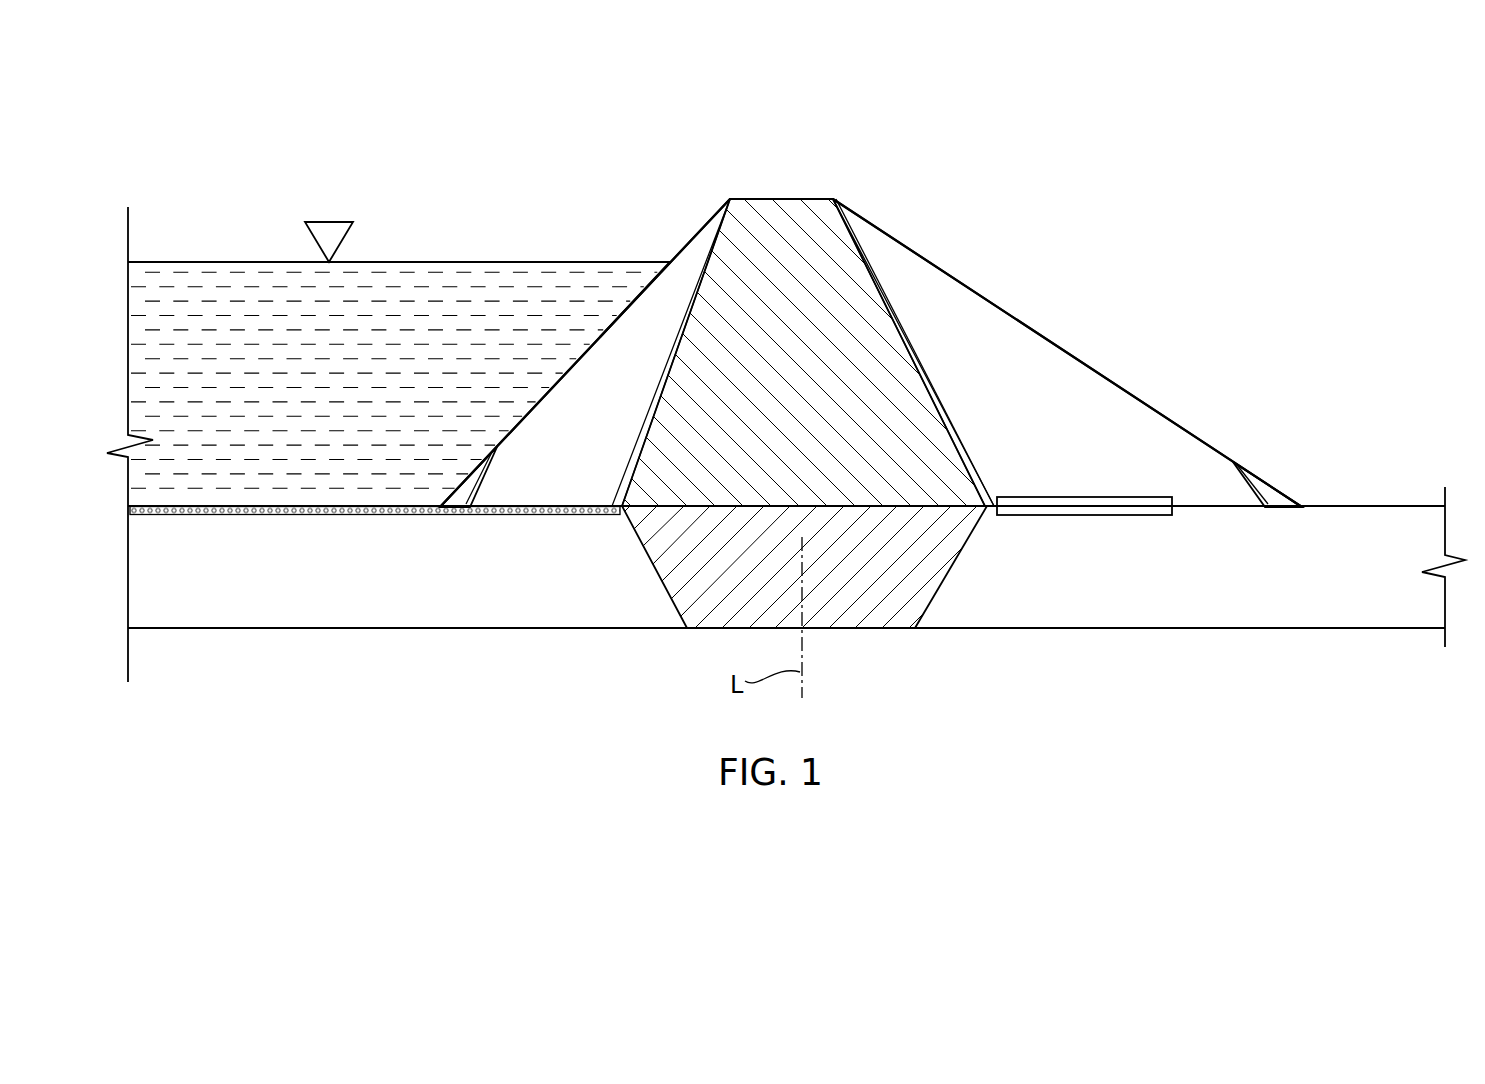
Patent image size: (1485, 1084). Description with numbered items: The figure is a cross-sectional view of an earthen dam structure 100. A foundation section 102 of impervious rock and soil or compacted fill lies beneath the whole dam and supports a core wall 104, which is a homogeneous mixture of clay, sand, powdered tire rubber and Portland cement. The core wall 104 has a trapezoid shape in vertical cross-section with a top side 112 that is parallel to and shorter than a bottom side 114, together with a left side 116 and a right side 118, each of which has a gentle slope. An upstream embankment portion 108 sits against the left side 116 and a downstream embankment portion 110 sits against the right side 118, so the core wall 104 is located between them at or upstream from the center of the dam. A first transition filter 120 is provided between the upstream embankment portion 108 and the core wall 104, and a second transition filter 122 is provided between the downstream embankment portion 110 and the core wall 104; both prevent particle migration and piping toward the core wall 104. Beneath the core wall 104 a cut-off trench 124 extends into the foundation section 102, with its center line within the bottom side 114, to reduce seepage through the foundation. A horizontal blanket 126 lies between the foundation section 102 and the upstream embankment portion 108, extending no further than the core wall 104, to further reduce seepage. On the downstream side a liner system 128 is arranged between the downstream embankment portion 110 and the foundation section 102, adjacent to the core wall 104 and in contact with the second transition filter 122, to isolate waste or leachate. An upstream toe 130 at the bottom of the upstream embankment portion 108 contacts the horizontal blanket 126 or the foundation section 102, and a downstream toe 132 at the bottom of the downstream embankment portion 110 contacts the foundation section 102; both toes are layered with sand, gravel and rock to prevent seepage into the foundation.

The earthen dam structure 100 is at (203, 133).
The foundation section 102 is at (593, 603).
The core wall 104 is at (832, 258).
The upstream embankment portion 108 is at (668, 300).
The downstream embankment portion 110 is at (1100, 413).
The top side 112 is at (782, 198).
The bottom side 114 is at (917, 505).
The left side 116 is at (700, 287).
The right side 118 is at (890, 313).
The first transition filter 120 is at (625, 312).
The second transition filter 122 is at (907, 333).
The cut-off trench 124 is at (860, 598).
The horizontal blanket 126 is at (355, 510).
The liner system 128 is at (1077, 510).
The upstream toe 130 is at (452, 500).
The downstream toe 132 is at (1278, 500).